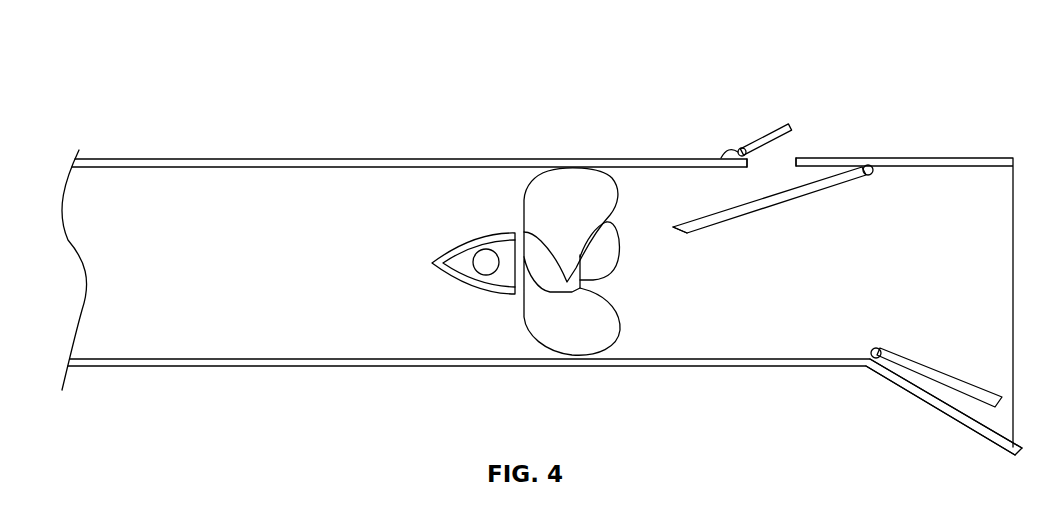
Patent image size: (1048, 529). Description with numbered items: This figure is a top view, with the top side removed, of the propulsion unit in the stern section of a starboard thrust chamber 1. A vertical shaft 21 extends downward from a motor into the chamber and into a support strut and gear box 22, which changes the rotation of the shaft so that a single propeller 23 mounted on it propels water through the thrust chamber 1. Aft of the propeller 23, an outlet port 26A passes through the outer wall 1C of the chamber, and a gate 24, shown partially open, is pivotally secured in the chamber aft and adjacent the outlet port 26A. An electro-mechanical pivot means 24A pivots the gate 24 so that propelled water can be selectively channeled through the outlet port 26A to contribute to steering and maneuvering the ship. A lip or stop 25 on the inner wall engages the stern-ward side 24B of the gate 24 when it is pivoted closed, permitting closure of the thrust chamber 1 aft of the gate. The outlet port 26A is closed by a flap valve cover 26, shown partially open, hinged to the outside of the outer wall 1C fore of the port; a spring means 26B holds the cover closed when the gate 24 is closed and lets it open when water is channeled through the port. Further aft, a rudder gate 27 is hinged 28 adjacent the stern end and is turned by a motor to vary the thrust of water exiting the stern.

The starboard thrust chamber 1 is at (267, 210).
The outer wall 1C is at (410, 159).
The vertical shaft 21 is at (472, 278).
The support strut and gear box 22 is at (443, 247).
The single propeller 23 is at (526, 210).
The gate 24 is at (782, 210).
The electro-mechanical pivot means 24A is at (876, 182).
The stern-ward side of the gate 24B is at (699, 233).
The lip or stop 25 is at (870, 352).
The flap valve cover 26 is at (760, 128).
The outlet port 26A is at (773, 160).
The spring means 26B is at (720, 156).
The rudder gate 27 is at (928, 364).
The hinge 28 is at (880, 348).